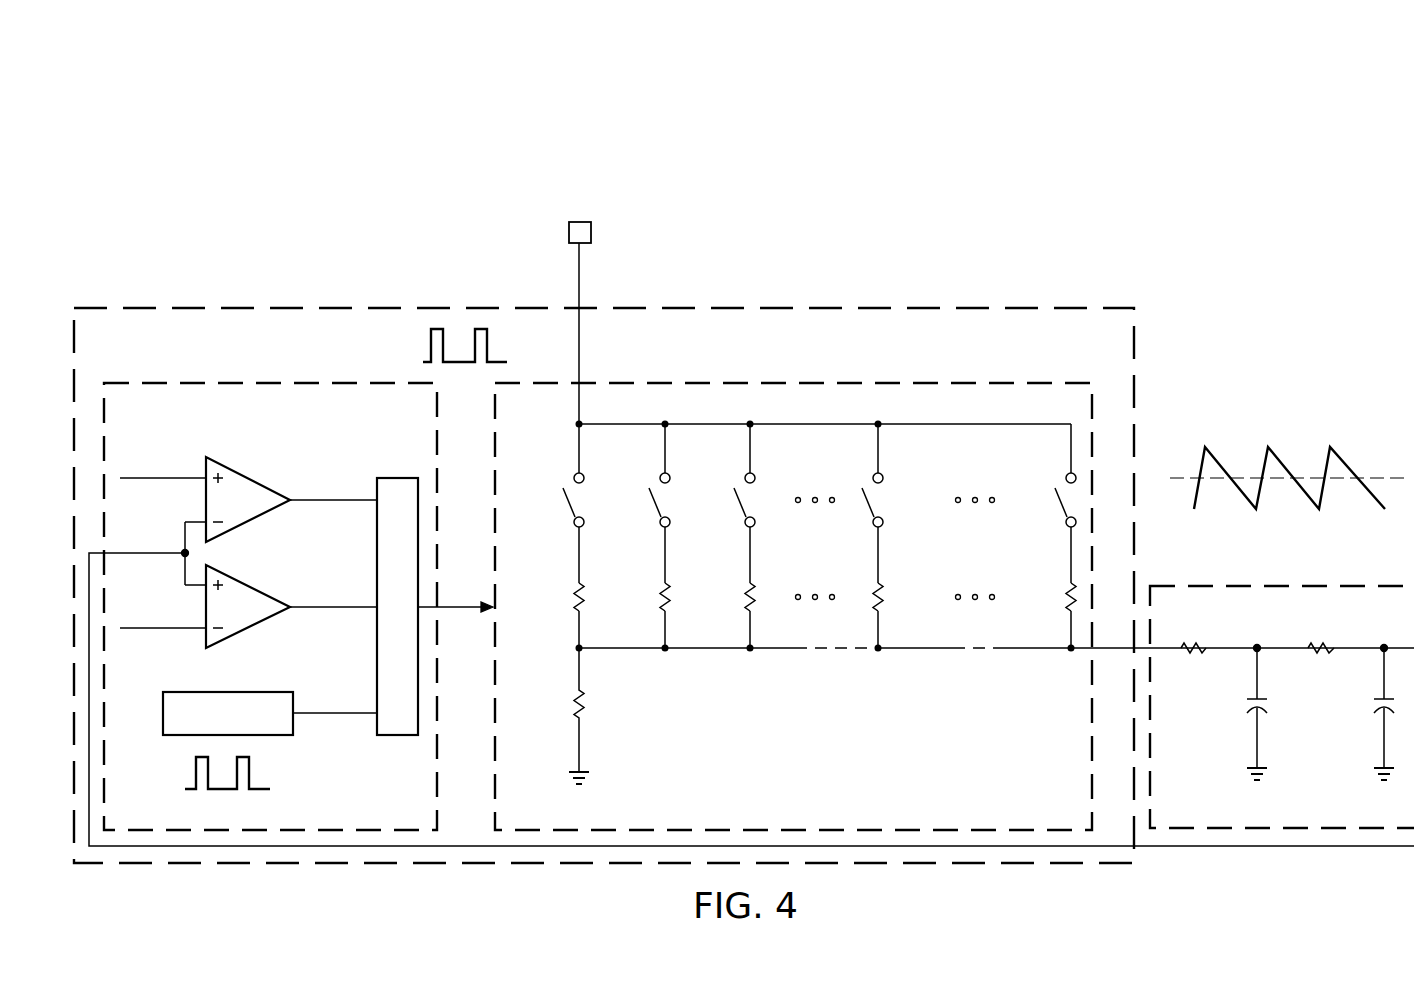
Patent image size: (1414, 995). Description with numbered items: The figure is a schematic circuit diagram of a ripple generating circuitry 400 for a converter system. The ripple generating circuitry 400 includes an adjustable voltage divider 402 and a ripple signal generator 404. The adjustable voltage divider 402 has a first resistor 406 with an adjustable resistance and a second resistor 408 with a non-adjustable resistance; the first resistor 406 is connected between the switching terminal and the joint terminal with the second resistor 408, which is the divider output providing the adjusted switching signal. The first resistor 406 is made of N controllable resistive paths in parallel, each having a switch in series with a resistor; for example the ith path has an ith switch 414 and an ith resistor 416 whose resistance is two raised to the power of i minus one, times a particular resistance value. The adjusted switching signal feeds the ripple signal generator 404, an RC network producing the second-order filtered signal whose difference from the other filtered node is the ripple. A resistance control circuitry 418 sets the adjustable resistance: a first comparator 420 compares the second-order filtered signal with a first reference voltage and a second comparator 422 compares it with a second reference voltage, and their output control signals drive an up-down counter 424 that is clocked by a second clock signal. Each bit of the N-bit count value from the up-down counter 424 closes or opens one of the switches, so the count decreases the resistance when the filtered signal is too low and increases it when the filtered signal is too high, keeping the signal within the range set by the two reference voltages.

The ripple generating circuitry 400 is at (612, 144).
The adjustable voltage divider 402 is at (862, 301).
The ripple signal generator 404 is at (1343, 578).
The first resistor 406 is at (938, 376).
The second resistor 408 is at (573, 703).
The ith switch 414 is at (864, 498).
The ith resistor 416 is at (872, 600).
The resistance control circuitry 418 is at (226, 374).
The first comparator 420 is at (252, 481).
The second comparator 422 is at (250, 626).
The up-down counter 424 is at (400, 737).